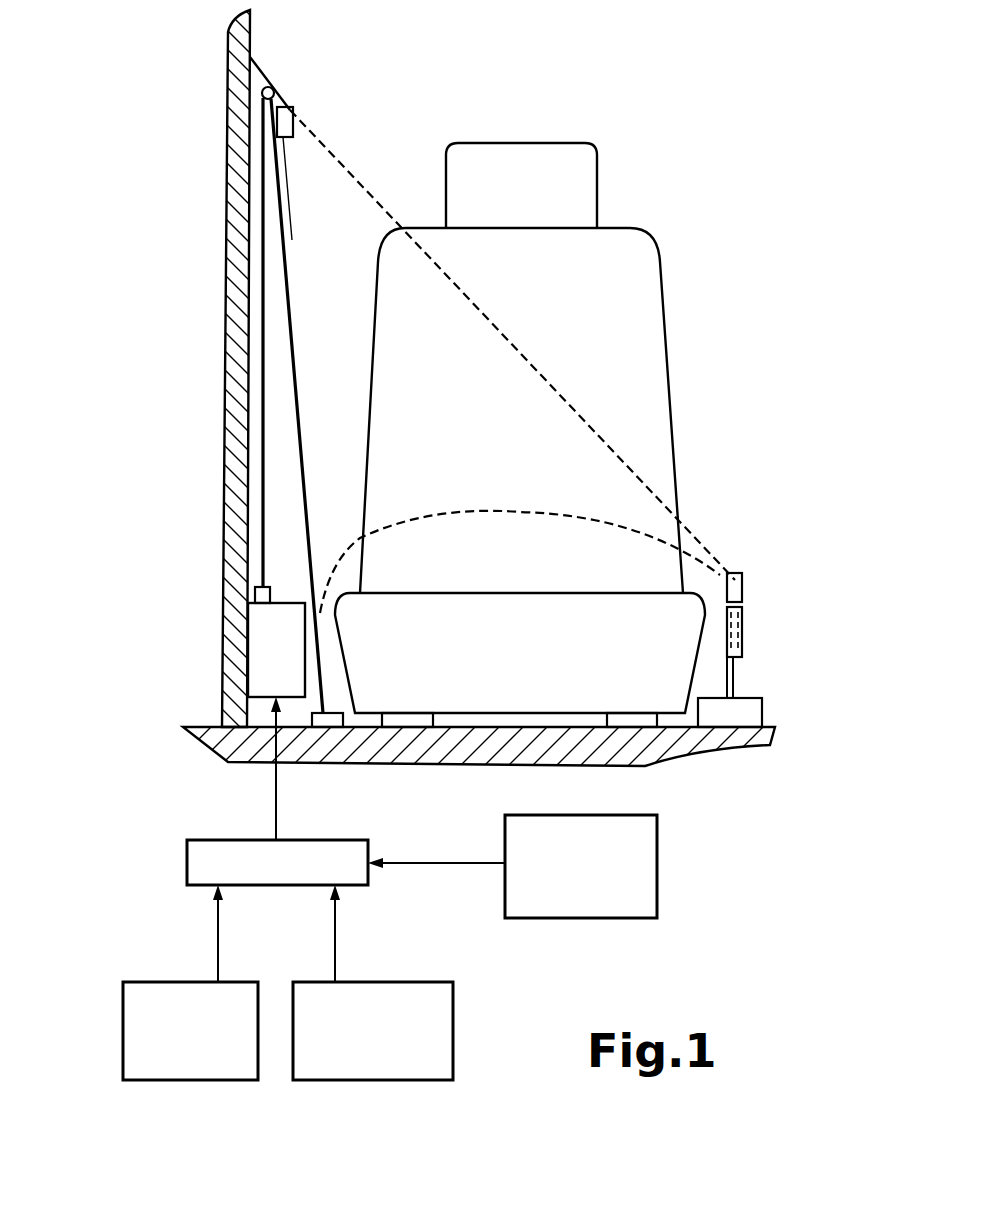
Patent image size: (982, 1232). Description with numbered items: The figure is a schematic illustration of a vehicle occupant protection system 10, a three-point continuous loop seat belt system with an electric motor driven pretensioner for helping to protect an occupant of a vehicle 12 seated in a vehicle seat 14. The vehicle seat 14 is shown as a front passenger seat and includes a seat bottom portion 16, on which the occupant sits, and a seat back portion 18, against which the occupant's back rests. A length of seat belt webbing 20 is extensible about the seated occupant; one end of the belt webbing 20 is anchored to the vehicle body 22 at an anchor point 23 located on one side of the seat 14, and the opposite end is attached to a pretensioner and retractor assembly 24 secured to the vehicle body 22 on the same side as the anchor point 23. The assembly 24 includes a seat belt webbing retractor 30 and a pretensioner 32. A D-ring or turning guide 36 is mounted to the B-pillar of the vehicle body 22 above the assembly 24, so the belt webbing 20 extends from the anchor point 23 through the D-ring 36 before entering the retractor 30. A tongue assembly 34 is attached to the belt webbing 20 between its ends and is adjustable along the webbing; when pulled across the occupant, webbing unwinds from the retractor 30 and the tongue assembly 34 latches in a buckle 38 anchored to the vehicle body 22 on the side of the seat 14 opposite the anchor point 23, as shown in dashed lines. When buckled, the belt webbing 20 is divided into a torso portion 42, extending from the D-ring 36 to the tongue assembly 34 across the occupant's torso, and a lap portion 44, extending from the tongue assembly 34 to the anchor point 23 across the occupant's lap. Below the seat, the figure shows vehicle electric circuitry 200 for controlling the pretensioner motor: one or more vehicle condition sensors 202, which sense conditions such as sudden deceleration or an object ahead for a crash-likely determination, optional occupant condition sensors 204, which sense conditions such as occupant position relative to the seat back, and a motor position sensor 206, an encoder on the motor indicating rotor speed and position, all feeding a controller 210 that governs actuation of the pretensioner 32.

The vehicle occupant protection system 10 is at (537, 105).
The vehicle 12 is at (190, 443).
The vehicle seat 14 is at (553, 442).
The seat bottom portion 16 is at (647, 680).
The seat back portion 18 is at (630, 245).
The seat belt webbing 20 is at (308, 375).
The vehicle body 22 is at (228, 750).
The anchor point 23 is at (337, 710).
The pretensioner and retractor assembly 24 is at (240, 641).
The seat belt webbing retractor 30 is at (232, 602).
The pretensioner 32 is at (255, 675).
The tongue assembly 34 is at (284, 118).
The D-ring 36 is at (262, 62).
The buckle 38 is at (742, 657).
The torso portion 42 is at (575, 408).
The lap portion 44 is at (545, 513).
The vehicle electric circuitry 200 is at (120, 908).
The vehicle condition sensors 202 is at (657, 892).
The occupant condition sensors 204 is at (453, 1008).
The motor position sensor 206 is at (123, 1015).
The controller 210 is at (187, 855).